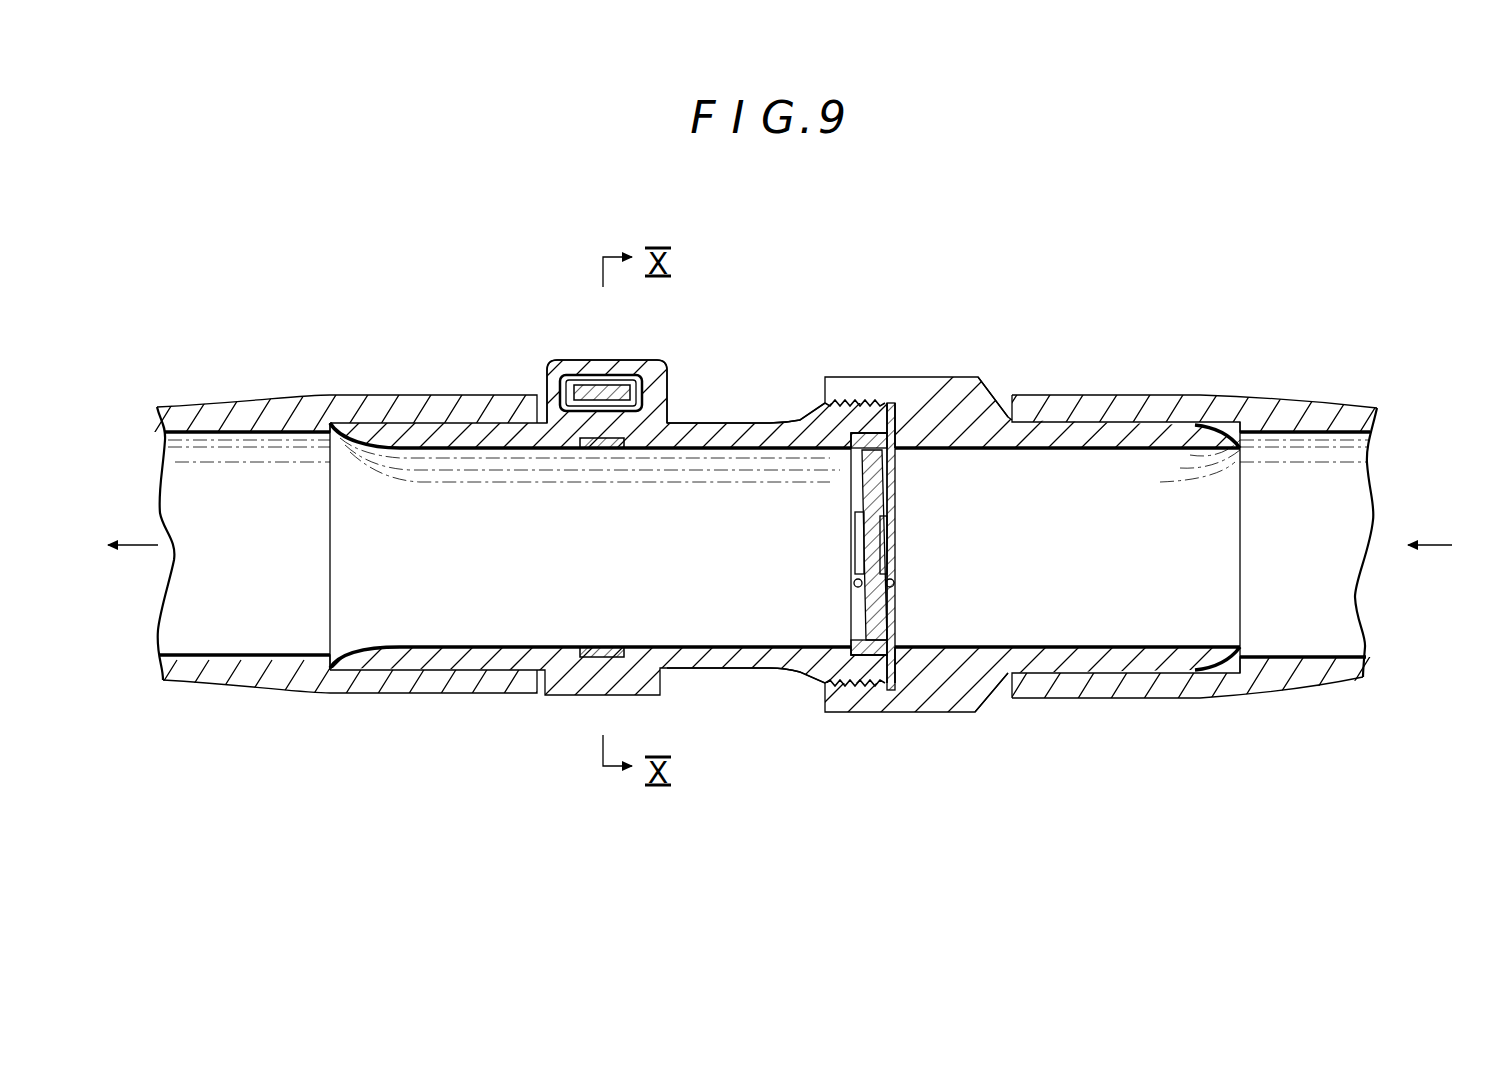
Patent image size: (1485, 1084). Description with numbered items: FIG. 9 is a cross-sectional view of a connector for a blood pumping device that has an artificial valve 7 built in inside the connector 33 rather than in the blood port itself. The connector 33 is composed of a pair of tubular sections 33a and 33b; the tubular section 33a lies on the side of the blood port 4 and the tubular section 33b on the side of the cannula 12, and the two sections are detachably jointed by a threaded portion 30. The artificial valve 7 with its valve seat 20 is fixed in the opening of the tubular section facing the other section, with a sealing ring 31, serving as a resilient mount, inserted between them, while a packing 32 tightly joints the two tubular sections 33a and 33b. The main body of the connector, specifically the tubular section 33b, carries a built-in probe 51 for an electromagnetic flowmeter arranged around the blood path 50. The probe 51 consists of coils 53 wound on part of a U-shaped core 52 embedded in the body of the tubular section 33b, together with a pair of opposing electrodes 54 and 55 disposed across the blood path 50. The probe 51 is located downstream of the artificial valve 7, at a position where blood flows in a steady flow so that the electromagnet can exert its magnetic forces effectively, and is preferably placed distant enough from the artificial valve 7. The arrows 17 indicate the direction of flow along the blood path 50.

The blood outlet port 4 is at (1255, 400).
The artificial valve 7 is at (906, 542).
The cannula 12 is at (362, 400).
The flow direction arrow 17 is at (130, 545).
The valve seat 20 is at (889, 458).
The threaded portion 30 is at (877, 428).
The sealing ring 31 is at (846, 400).
The packing 32 is at (899, 435).
The tubular connector 33 is at (899, 362).
The tubular section 33a is at (993, 410).
The tubular section 33b is at (696, 430).
The blood path 50 is at (620, 573).
The probe 51 is at (603, 348).
The U-shaped core 52 is at (592, 380).
The coils 53 is at (627, 372).
The electrode 54 is at (596, 452).
The electrode 55 is at (600, 645).